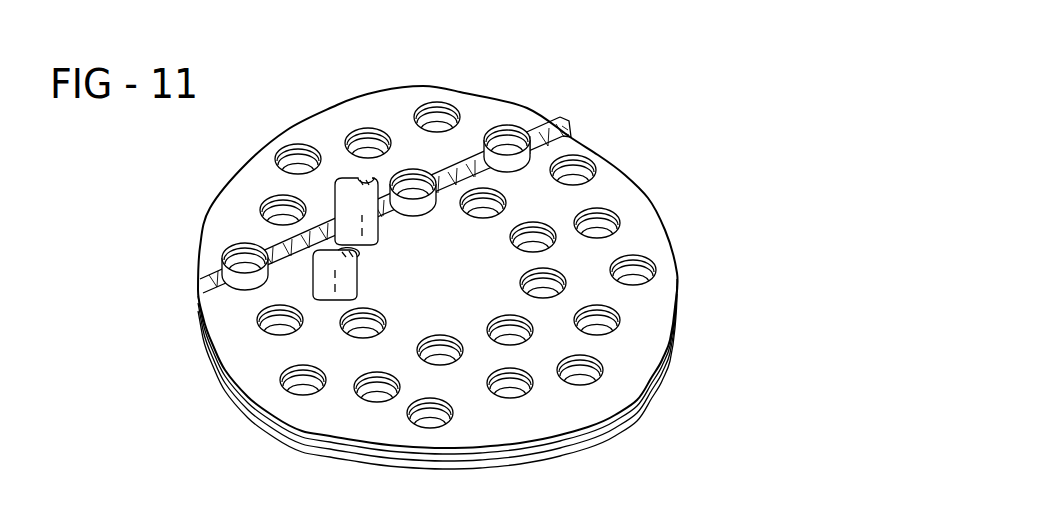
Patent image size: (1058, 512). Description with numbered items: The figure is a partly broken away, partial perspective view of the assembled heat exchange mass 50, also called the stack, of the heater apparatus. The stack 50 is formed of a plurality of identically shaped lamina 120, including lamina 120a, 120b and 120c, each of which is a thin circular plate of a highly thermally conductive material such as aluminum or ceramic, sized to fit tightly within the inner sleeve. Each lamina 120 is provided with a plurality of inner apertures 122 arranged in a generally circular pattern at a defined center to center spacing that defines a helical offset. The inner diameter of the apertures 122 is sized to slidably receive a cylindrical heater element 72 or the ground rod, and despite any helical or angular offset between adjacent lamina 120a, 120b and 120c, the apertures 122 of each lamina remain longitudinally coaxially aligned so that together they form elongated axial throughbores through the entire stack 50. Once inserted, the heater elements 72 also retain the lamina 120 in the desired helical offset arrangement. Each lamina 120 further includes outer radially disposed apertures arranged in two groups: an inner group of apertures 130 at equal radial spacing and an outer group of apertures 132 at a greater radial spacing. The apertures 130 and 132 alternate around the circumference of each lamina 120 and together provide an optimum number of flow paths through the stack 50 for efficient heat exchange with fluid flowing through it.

The heat exchange mass 50 is at (455, 268).
The lamina 120 is at (455, 292).
The lamina 120a is at (667, 342).
The lamina 120b is at (655, 363).
The lamina 120c is at (648, 387).
The inner apertures 122 is at (346, 333).
The inner group of apertures 130 is at (363, 400).
The outer group of apertures 132 is at (433, 428).
The heater element 72 is at (379, 237).